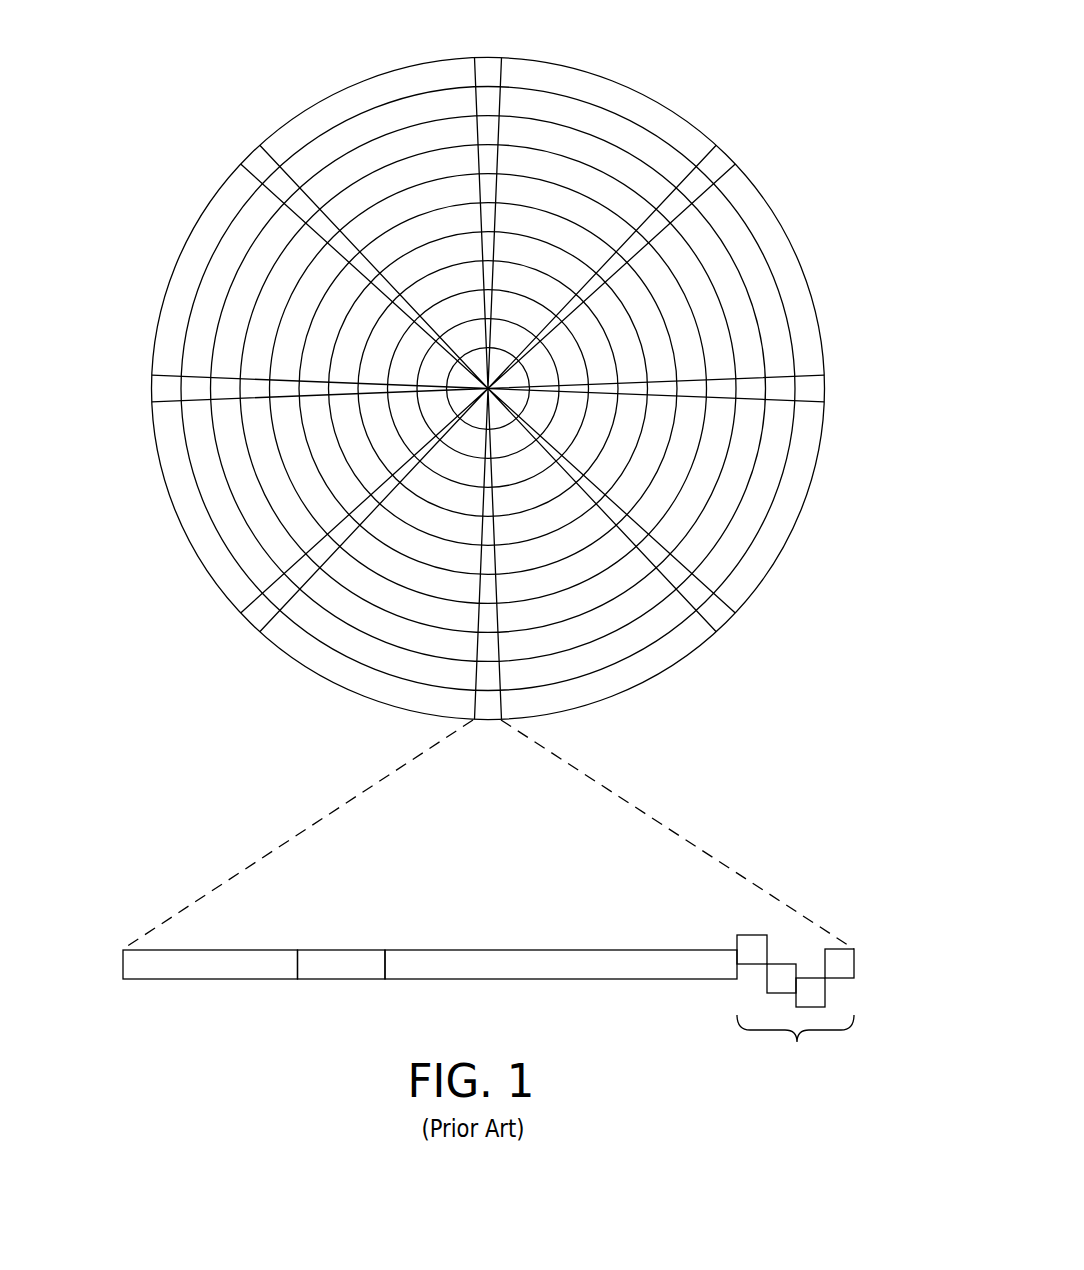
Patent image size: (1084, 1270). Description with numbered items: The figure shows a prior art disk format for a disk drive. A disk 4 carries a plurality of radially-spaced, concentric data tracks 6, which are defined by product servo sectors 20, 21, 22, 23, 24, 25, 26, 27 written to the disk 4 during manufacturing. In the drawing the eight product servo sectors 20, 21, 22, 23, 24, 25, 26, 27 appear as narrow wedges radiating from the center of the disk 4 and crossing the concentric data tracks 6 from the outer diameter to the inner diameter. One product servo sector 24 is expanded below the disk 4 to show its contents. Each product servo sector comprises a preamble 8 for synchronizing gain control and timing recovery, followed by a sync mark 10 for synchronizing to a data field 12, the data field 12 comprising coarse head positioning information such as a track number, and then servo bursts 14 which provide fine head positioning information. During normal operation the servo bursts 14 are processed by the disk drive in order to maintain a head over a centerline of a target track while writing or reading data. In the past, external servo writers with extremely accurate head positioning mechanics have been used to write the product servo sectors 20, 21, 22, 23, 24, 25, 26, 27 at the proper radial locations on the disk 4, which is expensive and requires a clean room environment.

The disk 4 is at (490, 399).
The data tracks 6 is at (603, 123).
The product servo sector 20 is at (488, 66).
The product servo sector 21 is at (720, 160).
The product servo sector 22 is at (818, 387).
The product servo sector 23 is at (717, 613).
The product servo sector 24 is at (340, 799).
The product servo sector 25 is at (255, 618).
The product servo sector 26 is at (152, 388).
The product servo sector 27 is at (344, 245).
The servo bursts 14 is at (495, 970).
The preamble 8 is at (190, 981).
The sync mark 10 is at (336, 981).
The data field 12 is at (548, 981).